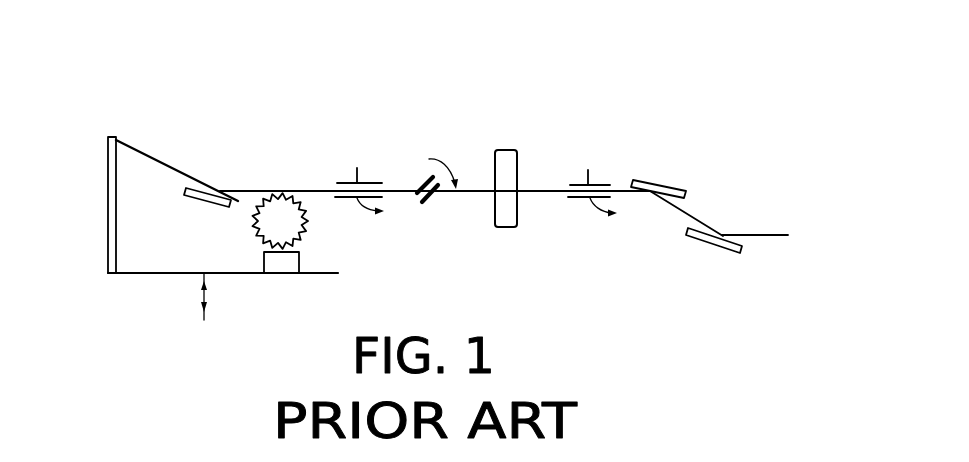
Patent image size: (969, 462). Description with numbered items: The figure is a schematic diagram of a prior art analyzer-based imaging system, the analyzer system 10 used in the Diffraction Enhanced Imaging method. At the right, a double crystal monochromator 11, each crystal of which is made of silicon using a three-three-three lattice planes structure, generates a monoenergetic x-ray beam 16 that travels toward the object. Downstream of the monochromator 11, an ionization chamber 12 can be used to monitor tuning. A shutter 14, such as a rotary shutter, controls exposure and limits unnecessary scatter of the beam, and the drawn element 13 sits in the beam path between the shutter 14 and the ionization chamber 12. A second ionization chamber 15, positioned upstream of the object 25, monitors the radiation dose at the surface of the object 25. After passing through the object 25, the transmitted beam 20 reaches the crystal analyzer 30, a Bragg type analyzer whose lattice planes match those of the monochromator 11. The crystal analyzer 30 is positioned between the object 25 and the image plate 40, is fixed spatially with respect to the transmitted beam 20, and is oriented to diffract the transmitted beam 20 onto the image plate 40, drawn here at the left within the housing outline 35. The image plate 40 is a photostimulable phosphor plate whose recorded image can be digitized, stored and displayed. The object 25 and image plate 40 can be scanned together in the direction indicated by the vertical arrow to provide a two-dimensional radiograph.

The analyzer system 10 is at (207, 114).
The double crystal monochromator 11 is at (663, 182).
The ionization chamber 12 is at (593, 185).
The beam shaping element 13 is at (507, 150).
The shutter 14 is at (418, 178).
The ionization chamber 15 is at (345, 183).
The monoenergetic x-ray beam 16 is at (327, 193).
The transmitted beam 20 is at (248, 190).
The object 25 is at (262, 234).
The crystal analyzer 30 is at (200, 200).
The reflector wall 35 is at (142, 148).
The image plate 40 is at (108, 208).